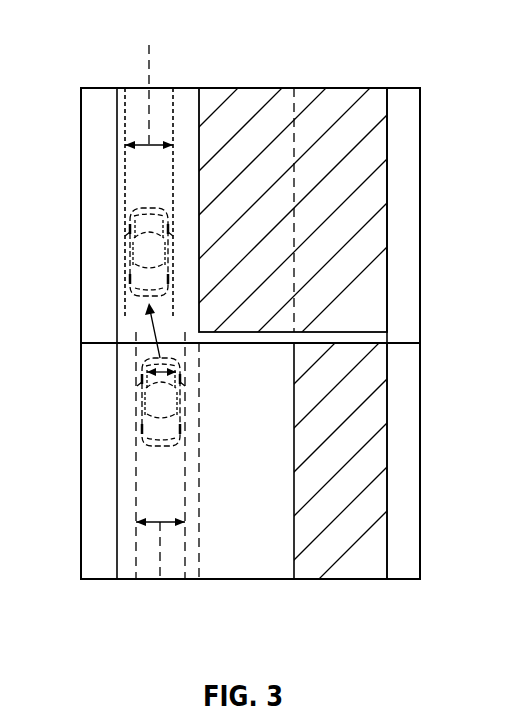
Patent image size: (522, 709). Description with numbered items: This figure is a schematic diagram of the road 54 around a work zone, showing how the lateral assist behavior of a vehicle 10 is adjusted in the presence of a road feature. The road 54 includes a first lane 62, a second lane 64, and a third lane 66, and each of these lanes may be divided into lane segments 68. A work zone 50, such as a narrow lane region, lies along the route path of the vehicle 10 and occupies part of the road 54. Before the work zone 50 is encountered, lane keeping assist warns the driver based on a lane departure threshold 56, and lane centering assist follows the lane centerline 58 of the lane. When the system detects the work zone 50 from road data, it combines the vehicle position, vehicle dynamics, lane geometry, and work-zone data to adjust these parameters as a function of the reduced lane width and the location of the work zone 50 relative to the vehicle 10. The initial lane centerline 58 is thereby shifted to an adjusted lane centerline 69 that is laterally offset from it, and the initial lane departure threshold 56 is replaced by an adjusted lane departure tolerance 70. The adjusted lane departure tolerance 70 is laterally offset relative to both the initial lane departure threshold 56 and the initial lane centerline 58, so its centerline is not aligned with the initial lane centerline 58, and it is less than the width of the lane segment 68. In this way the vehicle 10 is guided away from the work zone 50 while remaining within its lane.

The vehicle 10 is at (130, 272).
The work zone 50 is at (370, 241).
The road 54 is at (80, 79).
The lane departure threshold 56 is at (155, 520).
The lane centerline 58 is at (161, 553).
The first lane 62 is at (150, 563).
The second lane 64 is at (280, 563).
The third lane 66 is at (377, 445).
The lane segment 68 is at (388, 128).
The adjusted lane centerline 69 is at (150, 62).
The adjusted lane departure tolerance 70 is at (146, 143).